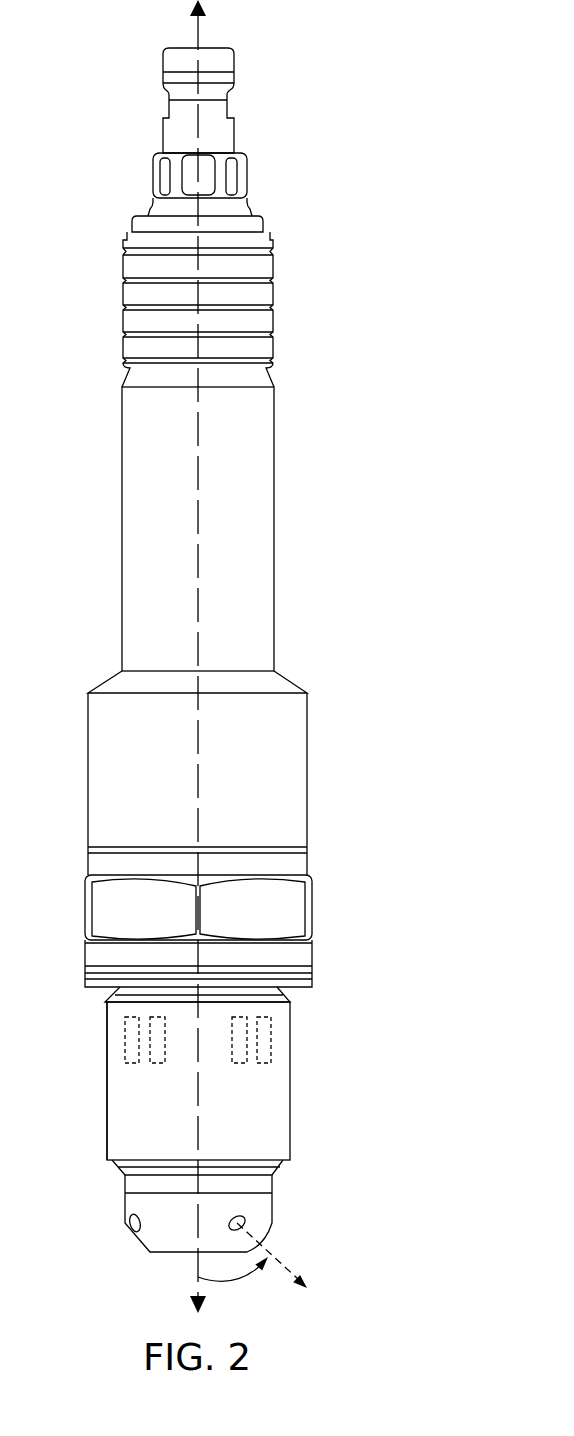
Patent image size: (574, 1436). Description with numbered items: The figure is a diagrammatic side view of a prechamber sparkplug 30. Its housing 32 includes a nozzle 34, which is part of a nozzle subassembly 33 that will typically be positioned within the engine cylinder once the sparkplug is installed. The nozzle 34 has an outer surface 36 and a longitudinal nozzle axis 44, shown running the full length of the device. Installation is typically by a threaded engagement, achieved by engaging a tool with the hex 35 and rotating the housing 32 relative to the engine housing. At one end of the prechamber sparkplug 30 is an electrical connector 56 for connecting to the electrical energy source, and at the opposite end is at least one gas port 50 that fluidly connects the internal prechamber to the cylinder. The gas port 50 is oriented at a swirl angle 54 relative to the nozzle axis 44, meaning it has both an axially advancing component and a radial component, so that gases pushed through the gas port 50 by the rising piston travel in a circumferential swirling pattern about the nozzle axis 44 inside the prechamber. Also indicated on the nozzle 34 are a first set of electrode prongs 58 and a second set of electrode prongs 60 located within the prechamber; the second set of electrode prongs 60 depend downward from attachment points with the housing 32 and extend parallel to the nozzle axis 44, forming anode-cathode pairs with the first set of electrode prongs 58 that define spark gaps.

The prechamber sparkplug 30 is at (396, 400).
The housing 32 is at (297, 732).
The nozzle subassembly 33 is at (315, 1164).
The nozzle 34 is at (290, 1037).
The hex 35 is at (297, 897).
The outer surface 36 is at (127, 1127).
The nozzle axis 44 is at (198, 547).
The gas port 50 is at (247, 1224).
The swirl angle 54 is at (233, 1279).
The electrical connector 56 is at (233, 58).
The first set of electrode prongs 58 is at (232, 1040).
The second set of electrode prongs 60 is at (138, 1065).